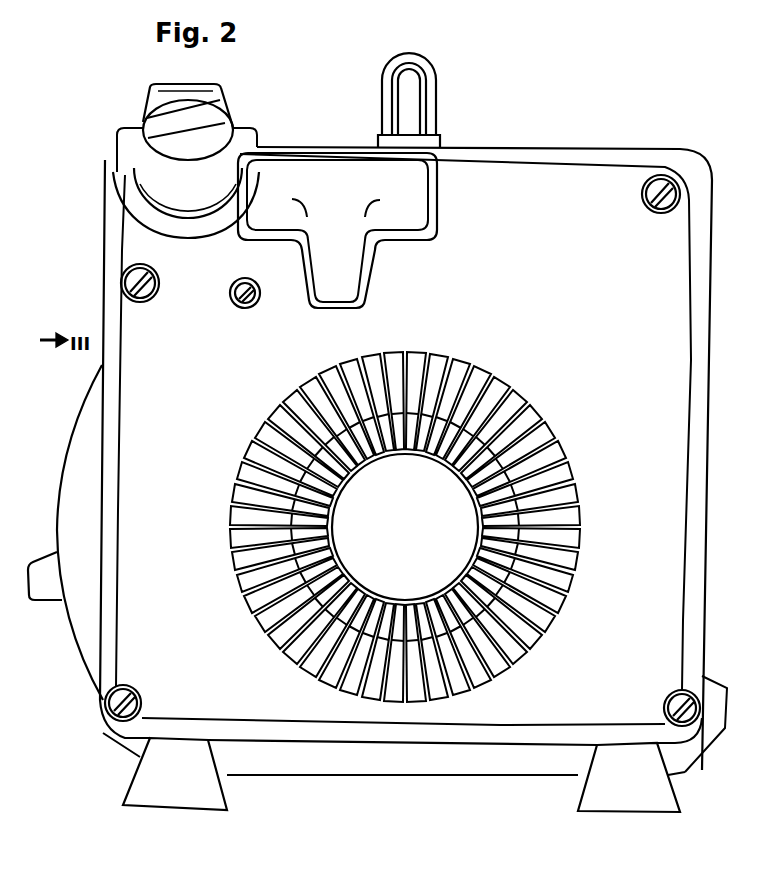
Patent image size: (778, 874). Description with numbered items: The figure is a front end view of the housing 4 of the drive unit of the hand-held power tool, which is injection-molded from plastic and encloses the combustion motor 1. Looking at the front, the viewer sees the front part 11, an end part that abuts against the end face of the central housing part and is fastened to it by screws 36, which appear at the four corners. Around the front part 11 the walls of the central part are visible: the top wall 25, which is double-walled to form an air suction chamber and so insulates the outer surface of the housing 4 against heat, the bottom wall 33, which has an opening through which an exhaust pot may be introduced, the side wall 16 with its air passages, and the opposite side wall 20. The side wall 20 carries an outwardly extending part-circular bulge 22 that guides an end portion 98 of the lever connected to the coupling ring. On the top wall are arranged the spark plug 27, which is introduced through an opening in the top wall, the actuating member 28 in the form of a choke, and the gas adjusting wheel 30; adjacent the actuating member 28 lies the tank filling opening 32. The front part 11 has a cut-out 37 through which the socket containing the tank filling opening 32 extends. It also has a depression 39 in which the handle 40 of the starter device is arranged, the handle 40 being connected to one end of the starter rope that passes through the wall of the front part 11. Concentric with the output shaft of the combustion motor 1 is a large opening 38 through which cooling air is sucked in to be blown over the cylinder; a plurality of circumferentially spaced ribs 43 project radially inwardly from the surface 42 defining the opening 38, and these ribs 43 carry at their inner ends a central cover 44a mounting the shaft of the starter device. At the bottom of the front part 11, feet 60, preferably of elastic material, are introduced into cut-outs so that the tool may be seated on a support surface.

The combustion motor 1 is at (315, 712).
The first housing 4 is at (517, 184).
The front part 11 is at (608, 190).
The side wall 16 is at (708, 528).
The side wall 20 is at (104, 312).
The part-circular bulge 22 is at (84, 443).
The top wall 25 is at (578, 147).
The spark plug 27 is at (428, 98).
The actuating member 28 is at (193, 149).
The gas adjusting wheel 30 is at (222, 93).
The tank filling opening 32 is at (247, 181).
The bottom wall 33 is at (427, 746).
The screws 36 is at (122, 268).
The cut-out 37 is at (165, 205).
The opening 38 is at (430, 527).
The depression 39 is at (367, 210).
The handle 40 is at (410, 184).
The surface defining the opening 42 is at (582, 514).
The ribs 43 is at (528, 440).
The grille hub 44a is at (450, 518).
The feet 60 is at (215, 792).
The end portion of the lever 98 is at (43, 588).